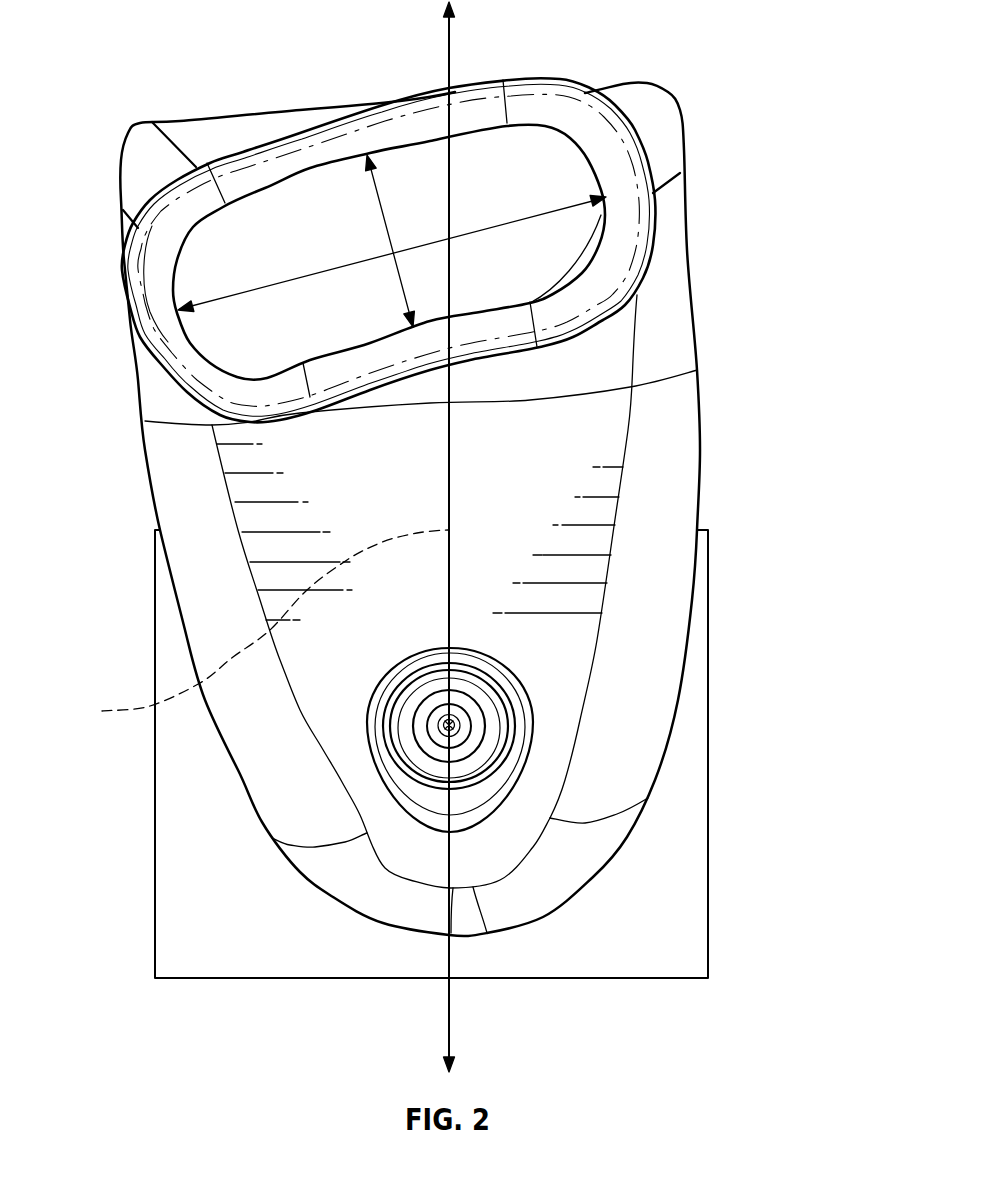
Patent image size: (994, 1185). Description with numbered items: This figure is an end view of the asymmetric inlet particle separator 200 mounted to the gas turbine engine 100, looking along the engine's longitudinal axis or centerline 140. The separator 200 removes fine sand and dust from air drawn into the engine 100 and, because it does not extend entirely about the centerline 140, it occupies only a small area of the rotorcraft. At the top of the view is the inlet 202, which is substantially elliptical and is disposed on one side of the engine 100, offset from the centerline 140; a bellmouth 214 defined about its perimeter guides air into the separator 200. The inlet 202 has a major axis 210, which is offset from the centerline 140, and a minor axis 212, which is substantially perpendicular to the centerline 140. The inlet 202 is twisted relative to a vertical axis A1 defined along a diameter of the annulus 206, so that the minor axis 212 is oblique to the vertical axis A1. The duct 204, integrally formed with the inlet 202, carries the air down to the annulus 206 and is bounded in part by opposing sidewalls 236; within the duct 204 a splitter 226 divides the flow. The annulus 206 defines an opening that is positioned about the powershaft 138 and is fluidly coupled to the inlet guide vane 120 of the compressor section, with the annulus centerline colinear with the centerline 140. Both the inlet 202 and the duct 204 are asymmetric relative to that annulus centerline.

The gas turbine engine 100 is at (731, 841).
The inlet guide vane 120 is at (700, 707).
The powershaft 138 is at (440, 746).
The longitudinal axis or centerline 140 is at (440, 722).
The asymmetric inlet particle separator 200 is at (716, 35).
The inlet 202 is at (636, 123).
The duct 204 is at (718, 238).
The annulus 206 is at (514, 952).
The major axis 210 is at (287, 280).
The minor axis 212 is at (505, 168).
The bellmouth 214 is at (393, 120).
The splitter 226 is at (251, 630).
The sidewalls 236 is at (697, 393).
The vertical axis A1 is at (447, 1020).